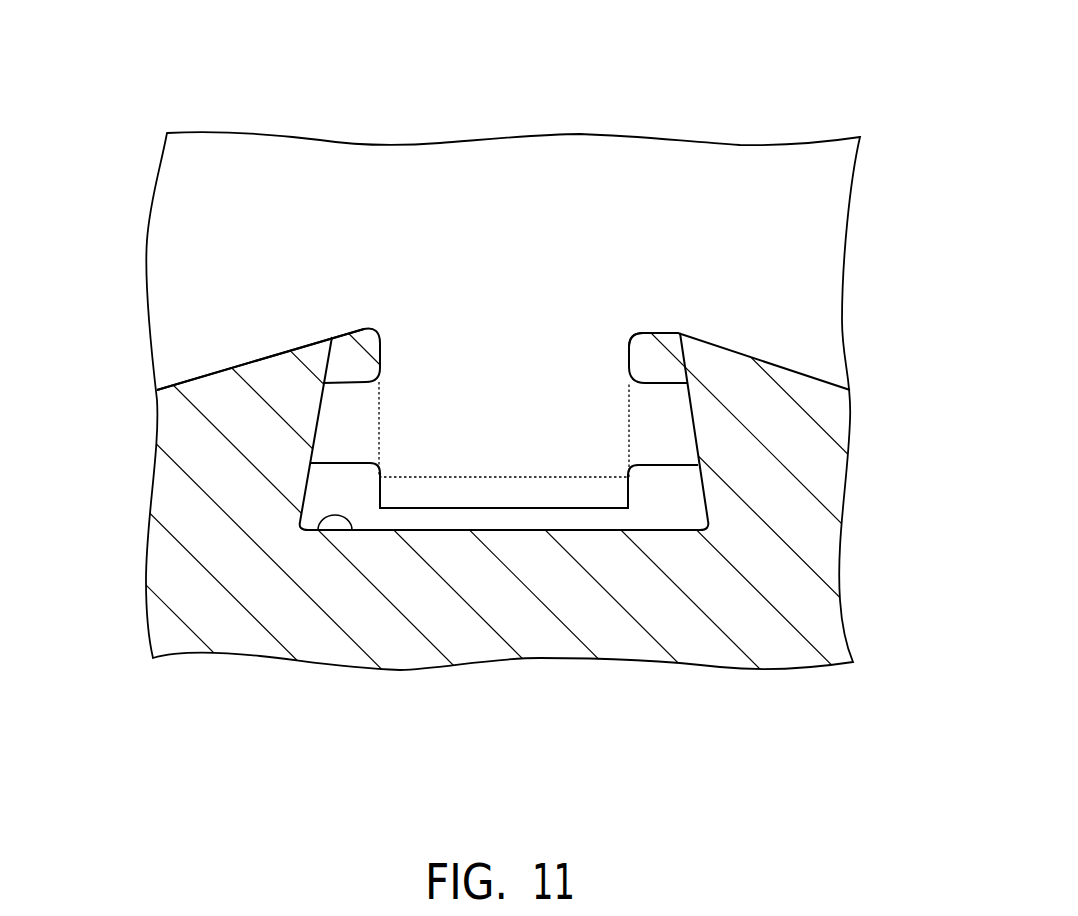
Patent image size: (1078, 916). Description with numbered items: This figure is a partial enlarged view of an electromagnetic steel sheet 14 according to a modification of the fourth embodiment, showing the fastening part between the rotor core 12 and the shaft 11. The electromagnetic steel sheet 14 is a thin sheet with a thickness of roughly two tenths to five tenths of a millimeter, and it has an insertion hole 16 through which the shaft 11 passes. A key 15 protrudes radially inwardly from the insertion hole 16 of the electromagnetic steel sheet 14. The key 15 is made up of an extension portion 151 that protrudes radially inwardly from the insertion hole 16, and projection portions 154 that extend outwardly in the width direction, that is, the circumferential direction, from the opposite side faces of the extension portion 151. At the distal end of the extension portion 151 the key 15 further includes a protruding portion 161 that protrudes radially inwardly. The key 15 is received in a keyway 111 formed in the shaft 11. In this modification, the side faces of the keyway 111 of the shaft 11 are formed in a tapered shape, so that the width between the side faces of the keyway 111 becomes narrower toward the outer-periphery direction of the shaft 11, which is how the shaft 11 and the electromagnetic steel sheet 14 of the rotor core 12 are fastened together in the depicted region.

The shaft 11 is at (758, 633).
The rotor core 12 is at (610, 135).
The electromagnetic steel sheet 14 is at (652, 178).
The key 15 is at (648, 360).
The insertion hole 16 is at (175, 385).
The extension portion 151 is at (490, 440).
The projection portions 154 is at (355, 437).
The protruding portion 161 is at (510, 490).
The keyway 111 is at (336, 515).